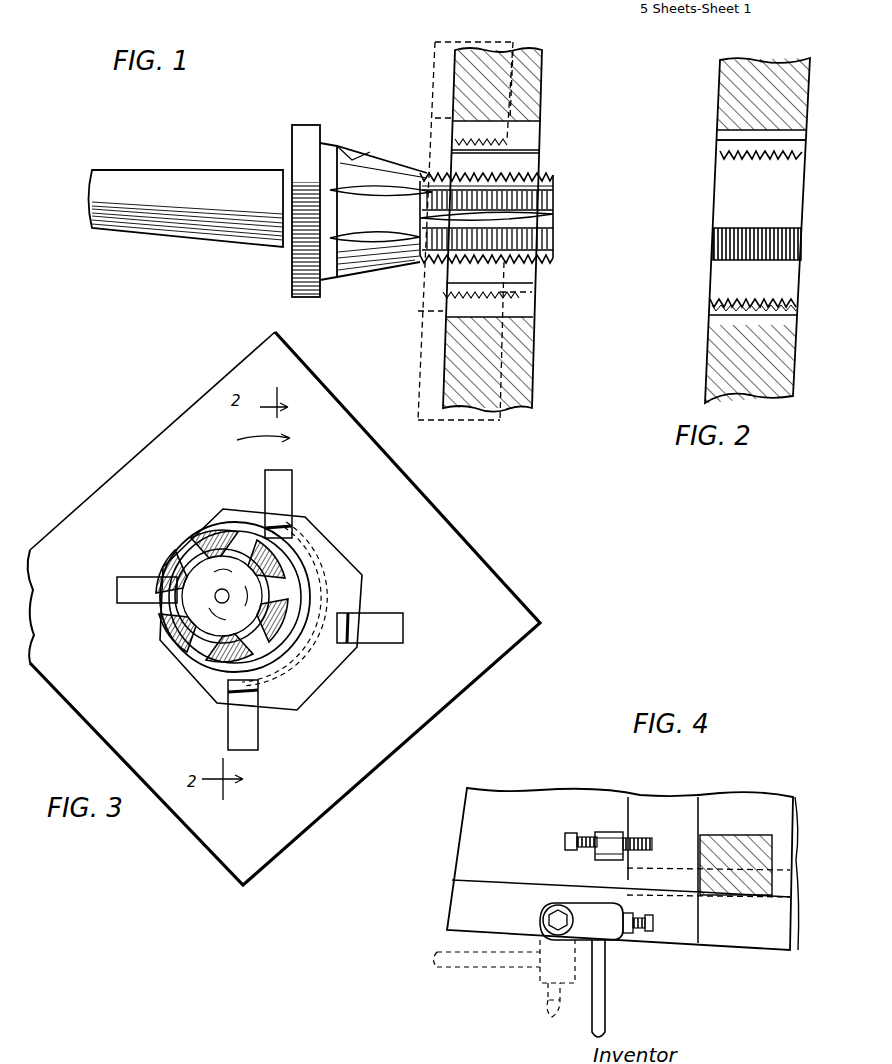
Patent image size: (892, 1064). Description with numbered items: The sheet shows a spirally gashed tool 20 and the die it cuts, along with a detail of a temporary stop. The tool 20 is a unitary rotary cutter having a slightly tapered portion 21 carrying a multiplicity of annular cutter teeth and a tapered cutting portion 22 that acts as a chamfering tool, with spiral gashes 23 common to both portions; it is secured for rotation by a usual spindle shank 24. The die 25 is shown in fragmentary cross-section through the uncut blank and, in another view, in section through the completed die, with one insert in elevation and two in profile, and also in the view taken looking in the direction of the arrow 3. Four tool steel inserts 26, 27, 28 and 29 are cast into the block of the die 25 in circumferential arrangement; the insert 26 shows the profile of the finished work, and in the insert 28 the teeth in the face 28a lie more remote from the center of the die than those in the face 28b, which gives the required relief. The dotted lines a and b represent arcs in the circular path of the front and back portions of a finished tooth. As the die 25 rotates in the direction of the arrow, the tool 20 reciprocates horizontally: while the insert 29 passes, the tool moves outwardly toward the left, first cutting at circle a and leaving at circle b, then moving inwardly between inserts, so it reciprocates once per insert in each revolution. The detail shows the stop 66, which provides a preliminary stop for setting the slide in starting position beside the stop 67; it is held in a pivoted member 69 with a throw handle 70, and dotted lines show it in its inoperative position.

In FIG. 1, the spirally gashed tool 20 is at (567, 225).
In FIG. 3, the spirally gashed tool 20 is at (187, 647).
In FIG. 1, the slightly tapered portion 21 is at (554, 191).
In FIG. 1, the tapered cutting portion 22 is at (367, 275).
In FIG. 1, the spiral gashes 23 is at (413, 236).
In FIG. 1, the spindle shank 24 is at (229, 178).
In FIG. 1, the die 25 is at (480, 231).
In FIG. 2, the die 25 is at (727, 87).
In FIG. 3, the die 25 is at (492, 593).
In FIG. 2, the insert 26 is at (720, 315).
In FIG. 3, the insert 26 is at (247, 732).
In FIG. 2, the insert 27 is at (710, 238).
In FIG. 3, the insert 27 is at (390, 619).
In FIG. 2, the insert 28 is at (732, 137).
In FIG. 3, the insert 28 is at (285, 493).
In FIG. 2, the face 28a is at (730, 141).
In FIG. 3, the face 28a is at (268, 518).
In FIG. 3, the face 28b is at (292, 542).
In FIG. 3, the insert 29 is at (138, 583).
In FIG. 1, the arrow 3 is at (576, 124).
In FIG. 3, the dotted line arc a is at (333, 598).
In FIG. 3, the dotted line arc b is at (333, 585).
In FIG. 4, the stop 66 is at (653, 930).
In FIG. 4, the stop 67 is at (640, 835).
In FIG. 4, the pivoted member 69 is at (581, 921).
In FIG. 4, the throw handle 70 is at (605, 1015).